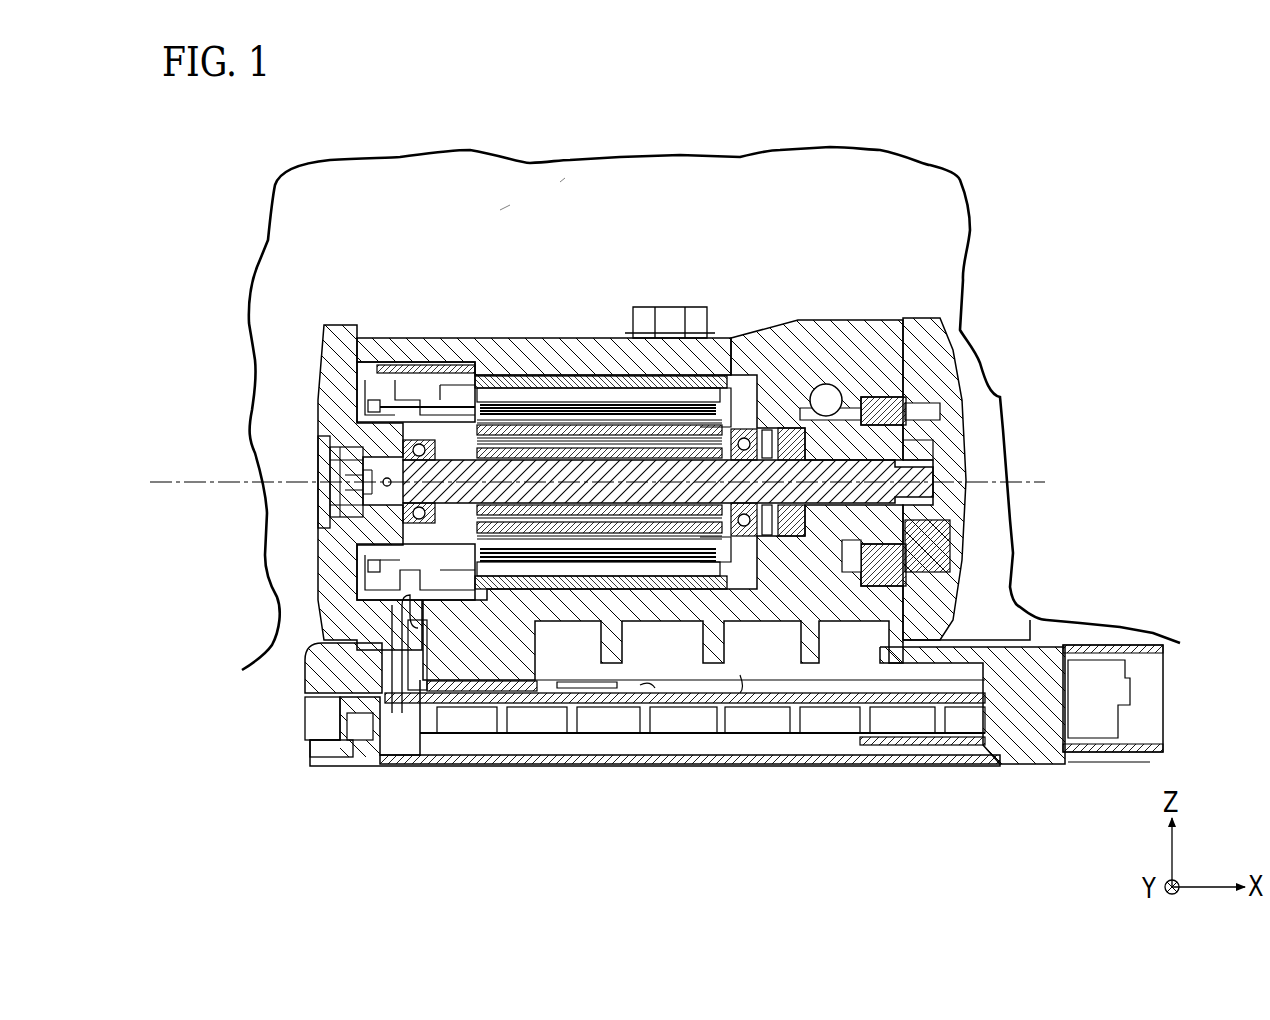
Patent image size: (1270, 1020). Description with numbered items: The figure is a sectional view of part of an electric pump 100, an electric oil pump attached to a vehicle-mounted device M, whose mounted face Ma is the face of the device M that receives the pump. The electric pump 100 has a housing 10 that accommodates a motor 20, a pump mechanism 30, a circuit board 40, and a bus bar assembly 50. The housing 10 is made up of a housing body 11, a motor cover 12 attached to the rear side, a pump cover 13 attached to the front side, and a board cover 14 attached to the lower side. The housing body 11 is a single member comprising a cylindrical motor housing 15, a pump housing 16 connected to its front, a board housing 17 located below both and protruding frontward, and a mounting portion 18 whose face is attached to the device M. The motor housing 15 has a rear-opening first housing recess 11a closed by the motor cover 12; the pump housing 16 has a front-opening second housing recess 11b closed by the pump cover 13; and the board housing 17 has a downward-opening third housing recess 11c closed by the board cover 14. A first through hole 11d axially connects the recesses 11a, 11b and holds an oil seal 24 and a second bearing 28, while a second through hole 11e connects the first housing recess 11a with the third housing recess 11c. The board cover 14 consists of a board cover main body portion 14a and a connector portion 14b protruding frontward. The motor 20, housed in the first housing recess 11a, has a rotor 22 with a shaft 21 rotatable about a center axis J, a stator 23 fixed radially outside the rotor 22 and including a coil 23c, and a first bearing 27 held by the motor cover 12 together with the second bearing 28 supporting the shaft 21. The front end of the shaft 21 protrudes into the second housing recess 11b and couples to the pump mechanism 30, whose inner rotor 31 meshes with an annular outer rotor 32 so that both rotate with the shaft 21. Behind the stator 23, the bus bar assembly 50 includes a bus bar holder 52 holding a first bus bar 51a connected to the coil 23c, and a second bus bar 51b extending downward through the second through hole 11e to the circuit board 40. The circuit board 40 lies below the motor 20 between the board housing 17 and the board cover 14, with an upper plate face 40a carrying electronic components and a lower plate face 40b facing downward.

The electric pump 100 is at (1000, 237).
The housing 10 is at (717, 428).
The housing body 11 is at (607, 350).
The first housing recess 11a is at (680, 373).
The second housing recess 11b is at (925, 415).
The third housing recess 11c is at (645, 683).
The first through hole 11d is at (810, 423).
The second through hole 11e is at (398, 730).
The motor cover 12 is at (348, 331).
The pump cover 13 is at (955, 540).
The board cover 14 is at (993, 770).
The board cover main body portion 14a is at (375, 740).
The connector portion 14b is at (1138, 645).
The motor housing 15 is at (475, 350).
The pump housing 16 is at (862, 338).
The board housing 17 is at (345, 670).
The mounting portion 18 is at (280, 467).
The motor 20 is at (500, 368).
The shaft 21 is at (575, 468).
The rotor 22 is at (548, 428).
The stator 23 is at (522, 380).
The coil 23c is at (652, 404).
The oil seal 24 is at (803, 425).
The first bearing 27 is at (412, 450).
The second bearing 28 is at (740, 430).
The pump mechanism 30 is at (875, 392).
The inner rotor 31 is at (885, 440).
The outer rotor 32 is at (905, 577).
The circuit board 40 is at (455, 703).
The upper plate face 40a is at (745, 688).
The lower plate face 40b is at (707, 707).
The bus bar assembly 50 is at (405, 355).
The first bus bar 51a is at (375, 405).
The second bus bar 51b is at (385, 605).
The bus bar holder 52 is at (425, 373).
The device M is at (562, 180).
The mounted face Ma is at (500, 203).
The center axis J is at (165, 482).